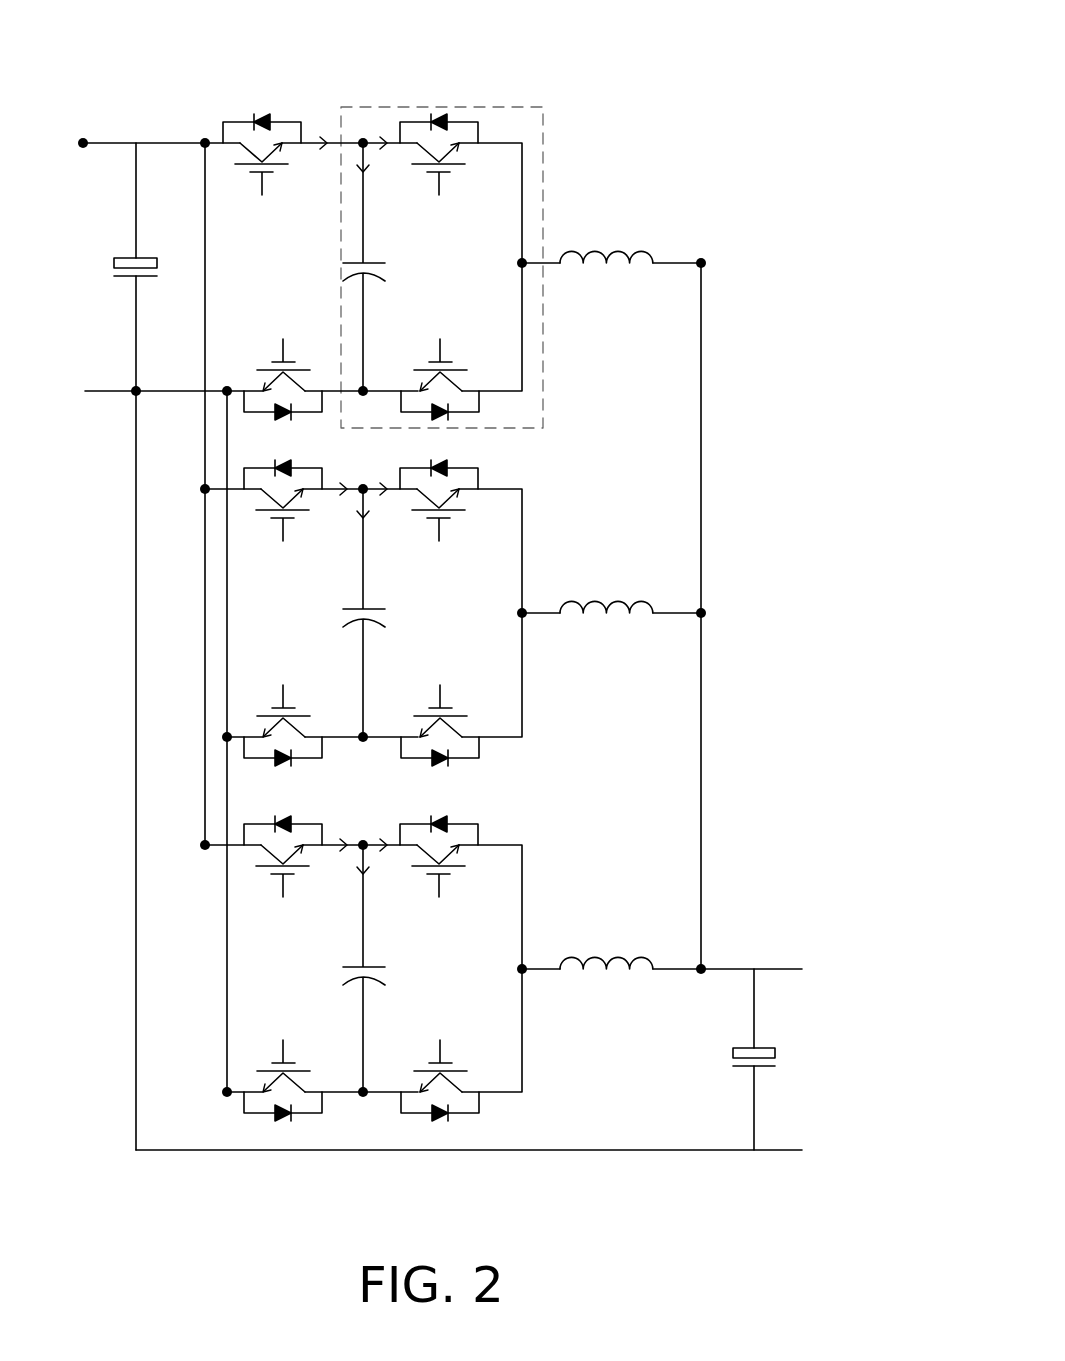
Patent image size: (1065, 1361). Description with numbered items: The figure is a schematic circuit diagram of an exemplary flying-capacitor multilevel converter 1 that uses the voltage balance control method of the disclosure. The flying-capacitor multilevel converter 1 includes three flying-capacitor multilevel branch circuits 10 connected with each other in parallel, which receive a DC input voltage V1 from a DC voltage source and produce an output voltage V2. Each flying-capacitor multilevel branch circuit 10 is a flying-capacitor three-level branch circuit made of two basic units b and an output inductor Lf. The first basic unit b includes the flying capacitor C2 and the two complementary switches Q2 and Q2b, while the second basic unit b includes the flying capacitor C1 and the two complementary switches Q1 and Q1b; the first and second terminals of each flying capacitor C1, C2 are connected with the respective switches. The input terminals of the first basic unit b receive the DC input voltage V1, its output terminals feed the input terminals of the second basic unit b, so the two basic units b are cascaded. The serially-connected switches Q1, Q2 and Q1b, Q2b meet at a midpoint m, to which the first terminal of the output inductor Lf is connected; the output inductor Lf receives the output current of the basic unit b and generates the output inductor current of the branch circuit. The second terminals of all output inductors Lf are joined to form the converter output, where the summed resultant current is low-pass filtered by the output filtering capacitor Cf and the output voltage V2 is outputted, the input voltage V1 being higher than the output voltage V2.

The flying-capacitor multilevel converter 1 is at (849, 46).
The flying-capacitor multilevel branch circuit 10 is at (621, 118).
The basic unit b is at (498, 107).
The switch Q1 is at (435, 507).
The switch Q2 is at (267, 507).
The switch Q1b is at (430, 729).
The switch Q2b is at (272, 729).
The flying capacitor C1 is at (383, 617).
The flying capacitor C2 is at (155, 646).
The output inductor Lf is at (614, 590).
The output filtering capacitor Cf is at (731, 1059).
The DC input voltage V1 is at (137, 264).
The output voltage V2 is at (815, 1064).
The midpoint m is at (508, 615).